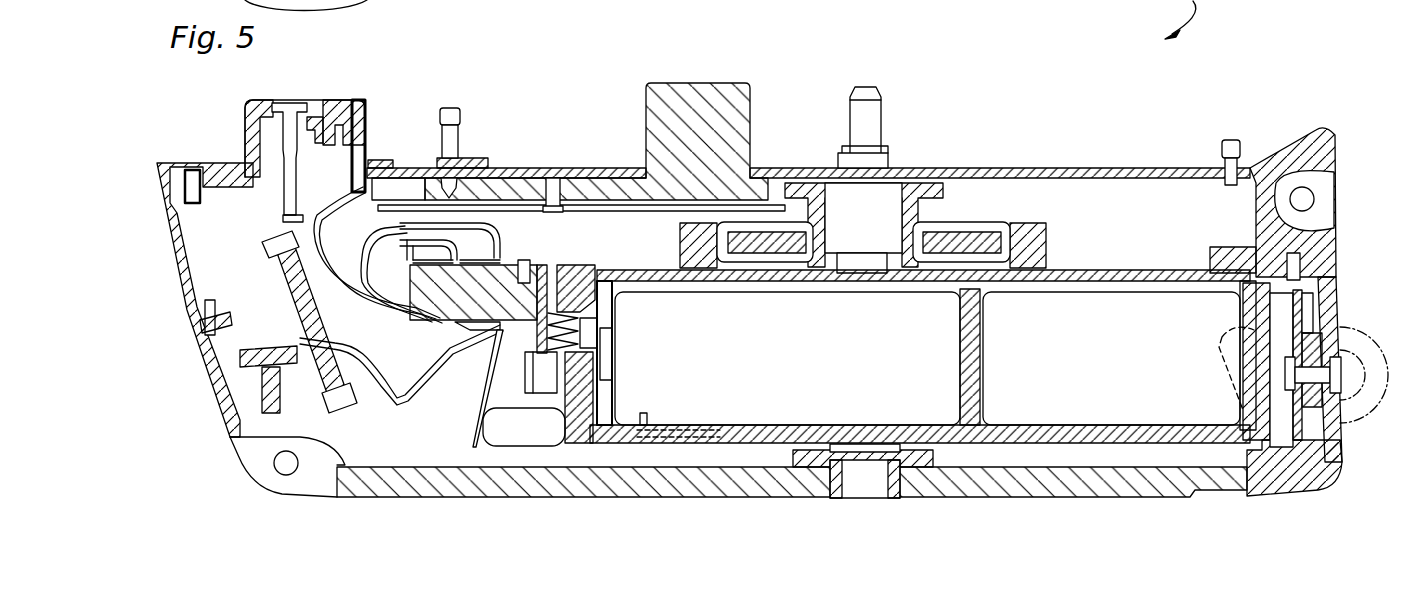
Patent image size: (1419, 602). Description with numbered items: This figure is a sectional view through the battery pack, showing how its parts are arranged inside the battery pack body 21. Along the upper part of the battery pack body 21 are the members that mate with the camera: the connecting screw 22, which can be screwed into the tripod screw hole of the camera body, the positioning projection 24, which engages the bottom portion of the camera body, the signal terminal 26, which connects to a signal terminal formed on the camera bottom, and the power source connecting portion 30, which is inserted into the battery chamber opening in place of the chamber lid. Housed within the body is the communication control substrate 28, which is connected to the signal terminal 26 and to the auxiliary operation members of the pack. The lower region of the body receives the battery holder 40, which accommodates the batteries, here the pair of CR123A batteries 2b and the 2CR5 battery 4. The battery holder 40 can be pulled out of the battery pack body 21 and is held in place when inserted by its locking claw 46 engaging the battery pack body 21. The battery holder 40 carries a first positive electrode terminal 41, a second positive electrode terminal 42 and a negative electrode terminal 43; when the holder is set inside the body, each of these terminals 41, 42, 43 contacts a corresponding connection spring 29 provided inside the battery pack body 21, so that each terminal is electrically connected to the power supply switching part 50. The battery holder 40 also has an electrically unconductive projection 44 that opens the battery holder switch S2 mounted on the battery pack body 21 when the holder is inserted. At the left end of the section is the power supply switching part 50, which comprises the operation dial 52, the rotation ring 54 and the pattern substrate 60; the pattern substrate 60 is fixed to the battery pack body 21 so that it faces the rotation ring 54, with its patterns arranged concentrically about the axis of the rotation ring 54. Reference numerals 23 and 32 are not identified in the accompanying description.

The CR123A batteries 2b is at (1103, 390).
The 2CR5 battery 4 is at (722, 393).
The battery pack body 21 is at (1338, 145).
The connecting screw 22 is at (880, 117).
The fitting 23 is at (870, 478).
The positioning projection 24 is at (447, 136).
The signal terminal 26 is at (688, 82).
The communication control substrate 28 is at (600, 210).
The connection spring 29 is at (547, 395).
The power source connecting portion 30 is at (247, 112).
The pin 32 is at (290, 116).
The battery holder 40 is at (1338, 298).
The first positive electrode terminal 41 is at (588, 350).
The second positive electrode terminal 42 is at (590, 360).
The negative electrode terminal 43 is at (592, 370).
The electrically unconductive projection 44 is at (500, 447).
The locking claw 46 is at (1306, 242).
The power supply switching part 50 is at (247, 288).
The operation dial 52 is at (207, 372).
The rotation ring 54 is at (293, 388).
The pattern substrate 60 is at (337, 343).
The battery holder switch S2 is at (473, 393).